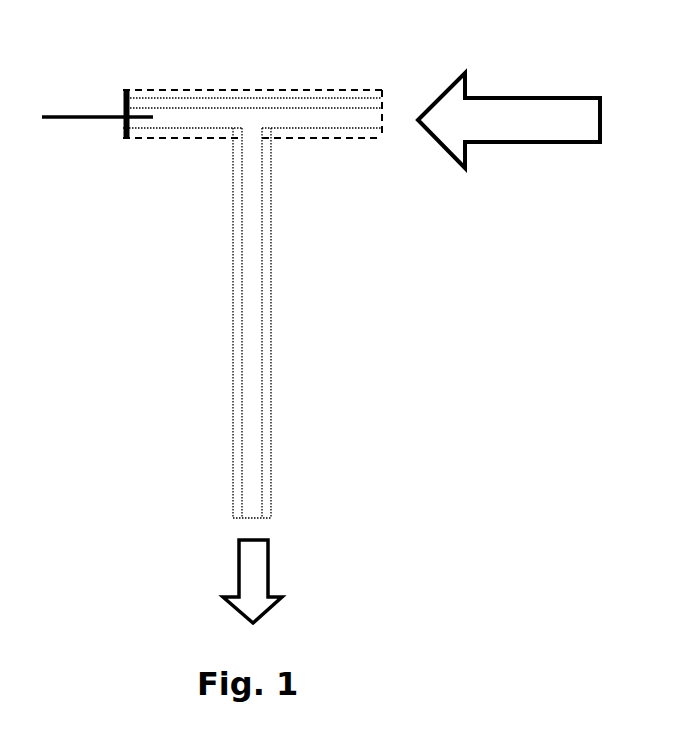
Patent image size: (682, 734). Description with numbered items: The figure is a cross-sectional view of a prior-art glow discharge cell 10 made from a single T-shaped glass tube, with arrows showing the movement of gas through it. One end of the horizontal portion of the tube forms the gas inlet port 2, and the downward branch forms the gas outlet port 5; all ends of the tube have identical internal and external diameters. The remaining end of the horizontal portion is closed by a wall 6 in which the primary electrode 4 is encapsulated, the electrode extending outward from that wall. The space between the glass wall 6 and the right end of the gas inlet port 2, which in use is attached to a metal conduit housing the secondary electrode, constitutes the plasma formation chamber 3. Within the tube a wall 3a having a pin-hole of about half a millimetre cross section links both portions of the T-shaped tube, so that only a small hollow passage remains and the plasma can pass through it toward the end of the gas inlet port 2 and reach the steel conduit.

The glow discharge cell 10 is at (170, 275).
The gas inlet port 2 is at (305, 118).
The plasma formation chamber 3 is at (185, 92).
The wall having a pin-hole 3a is at (232, 118).
The primary electrode 4 is at (70, 118).
The gas outlet port 5 is at (250, 425).
The wall 6 is at (123, 103).